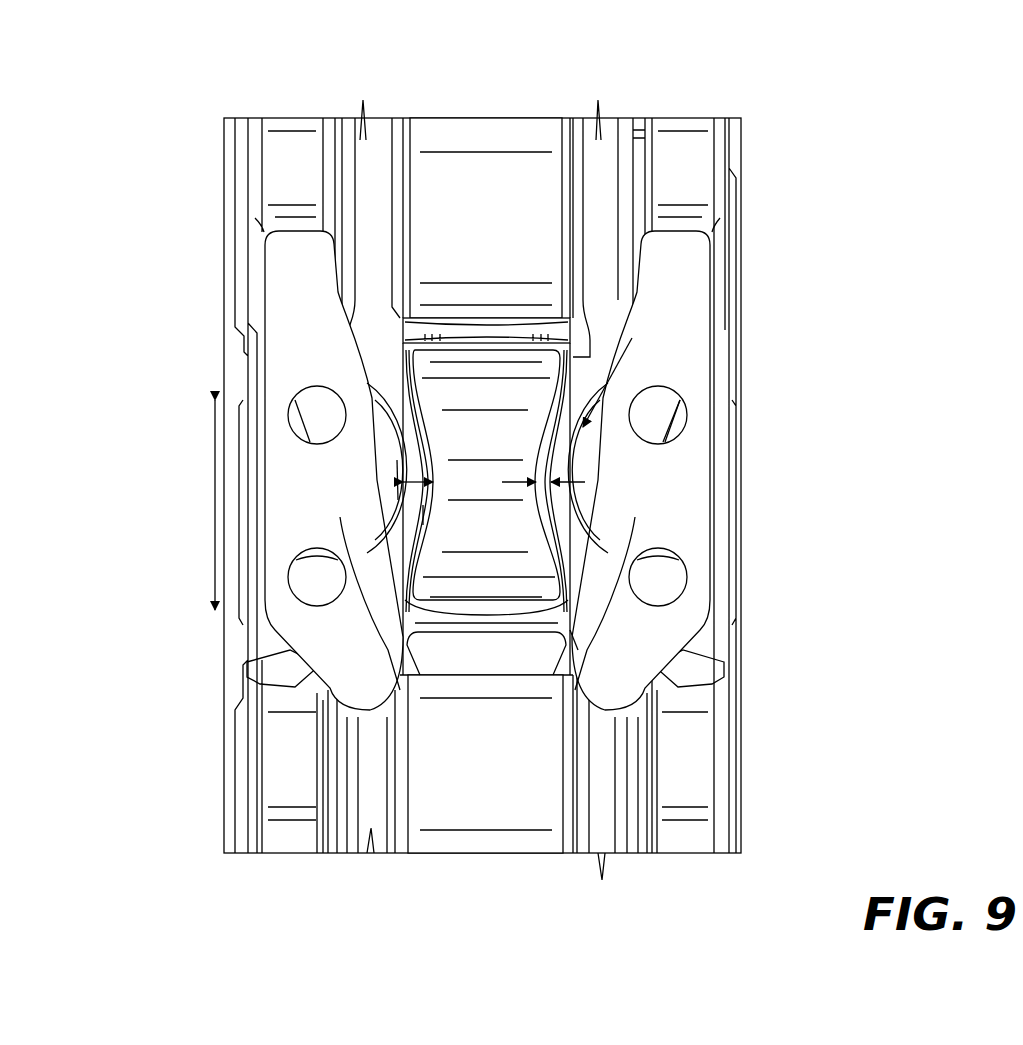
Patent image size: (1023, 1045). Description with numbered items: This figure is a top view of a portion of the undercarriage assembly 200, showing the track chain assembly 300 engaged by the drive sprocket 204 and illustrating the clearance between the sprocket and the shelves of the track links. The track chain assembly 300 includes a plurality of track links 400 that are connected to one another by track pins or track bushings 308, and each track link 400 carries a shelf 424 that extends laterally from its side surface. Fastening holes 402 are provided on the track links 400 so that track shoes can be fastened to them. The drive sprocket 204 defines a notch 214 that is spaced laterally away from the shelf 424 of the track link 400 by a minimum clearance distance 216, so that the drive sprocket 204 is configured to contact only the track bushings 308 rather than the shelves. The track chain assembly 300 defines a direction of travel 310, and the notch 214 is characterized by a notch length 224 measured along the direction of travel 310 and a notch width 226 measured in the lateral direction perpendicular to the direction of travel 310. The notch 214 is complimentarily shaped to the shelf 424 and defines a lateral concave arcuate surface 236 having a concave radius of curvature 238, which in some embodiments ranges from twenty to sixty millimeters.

The undercarriage assembly 200 is at (614, 62).
The drive sprocket 204 is at (580, 642).
The notch 214 is at (560, 510).
The minimum clearance distance 216 is at (577, 482).
The notch length 224 is at (410, 535).
The notch width 226 is at (423, 468).
The lateral concave arcuate surface 236 is at (428, 515).
The concave radius of curvature 238 is at (336, 470).
The track chain assembly 300 is at (727, 312).
The track bushing 308 is at (516, 204).
The direction of travel 310 is at (215, 500).
The track link 400 is at (375, 134).
The fastening hole 402 is at (688, 420).
The shelf 424 is at (694, 400).